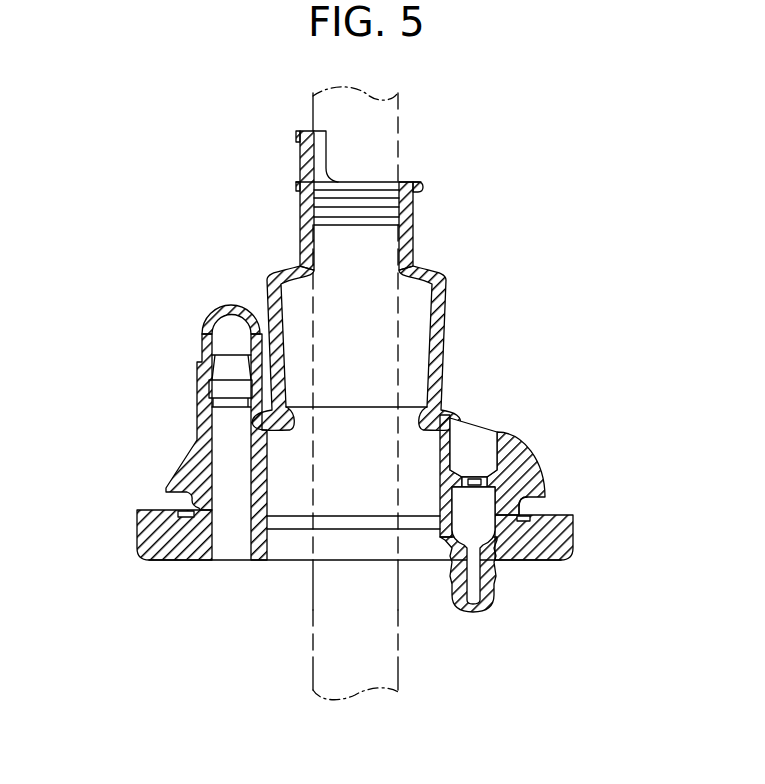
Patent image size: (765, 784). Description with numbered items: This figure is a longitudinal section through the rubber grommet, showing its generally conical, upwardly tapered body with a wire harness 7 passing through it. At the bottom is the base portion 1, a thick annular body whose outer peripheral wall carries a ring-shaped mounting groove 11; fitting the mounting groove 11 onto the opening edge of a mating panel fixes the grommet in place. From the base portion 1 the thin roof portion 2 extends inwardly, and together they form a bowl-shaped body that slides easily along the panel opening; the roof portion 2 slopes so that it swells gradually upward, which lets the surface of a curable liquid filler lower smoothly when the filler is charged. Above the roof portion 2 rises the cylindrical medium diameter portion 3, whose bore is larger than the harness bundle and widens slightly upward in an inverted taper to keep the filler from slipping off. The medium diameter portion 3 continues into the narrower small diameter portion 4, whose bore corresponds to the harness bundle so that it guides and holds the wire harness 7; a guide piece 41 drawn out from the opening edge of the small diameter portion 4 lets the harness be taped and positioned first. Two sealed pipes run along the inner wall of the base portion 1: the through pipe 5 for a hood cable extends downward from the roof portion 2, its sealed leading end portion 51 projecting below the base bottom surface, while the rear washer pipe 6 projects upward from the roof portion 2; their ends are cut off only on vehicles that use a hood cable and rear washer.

The base portion 1 is at (574, 532).
The roof portion 2 is at (476, 418).
The medium diameter portion 3 is at (447, 333).
The small diameter portion 4 is at (300, 238).
The guide piece 41 is at (300, 163).
The through pipe 5 is at (512, 508).
The leading end portion of the through pipe 51 is at (478, 611).
The rear washer pipe 6 is at (228, 308).
The wire harness 7 is at (312, 622).
The mounting groove 11 is at (165, 504).